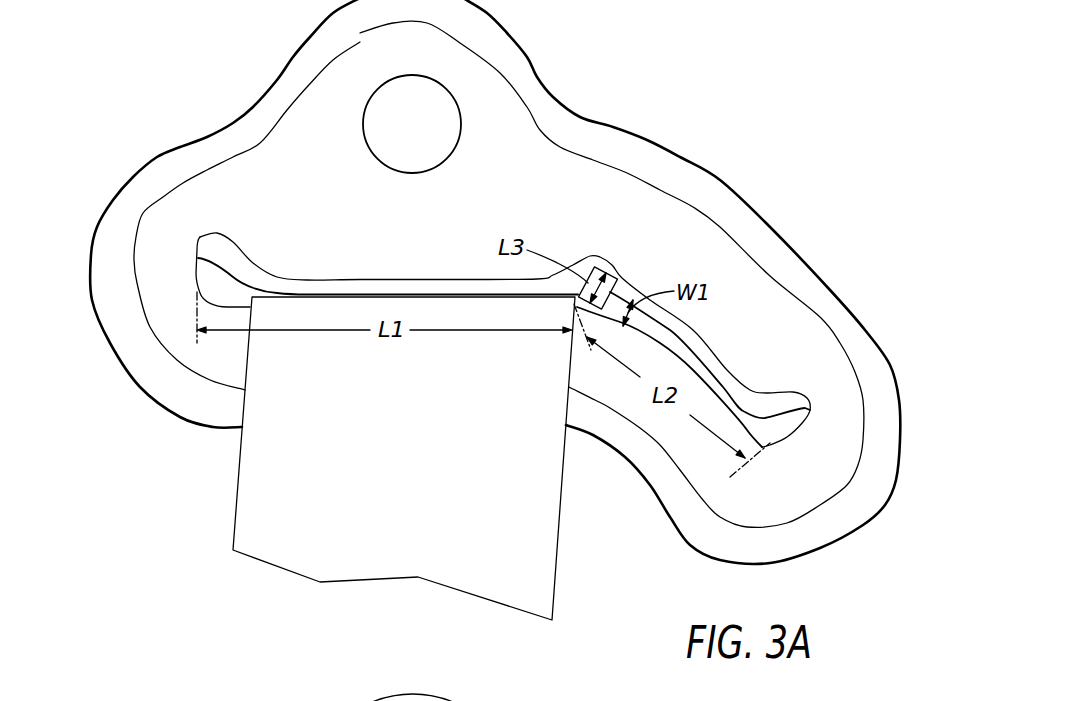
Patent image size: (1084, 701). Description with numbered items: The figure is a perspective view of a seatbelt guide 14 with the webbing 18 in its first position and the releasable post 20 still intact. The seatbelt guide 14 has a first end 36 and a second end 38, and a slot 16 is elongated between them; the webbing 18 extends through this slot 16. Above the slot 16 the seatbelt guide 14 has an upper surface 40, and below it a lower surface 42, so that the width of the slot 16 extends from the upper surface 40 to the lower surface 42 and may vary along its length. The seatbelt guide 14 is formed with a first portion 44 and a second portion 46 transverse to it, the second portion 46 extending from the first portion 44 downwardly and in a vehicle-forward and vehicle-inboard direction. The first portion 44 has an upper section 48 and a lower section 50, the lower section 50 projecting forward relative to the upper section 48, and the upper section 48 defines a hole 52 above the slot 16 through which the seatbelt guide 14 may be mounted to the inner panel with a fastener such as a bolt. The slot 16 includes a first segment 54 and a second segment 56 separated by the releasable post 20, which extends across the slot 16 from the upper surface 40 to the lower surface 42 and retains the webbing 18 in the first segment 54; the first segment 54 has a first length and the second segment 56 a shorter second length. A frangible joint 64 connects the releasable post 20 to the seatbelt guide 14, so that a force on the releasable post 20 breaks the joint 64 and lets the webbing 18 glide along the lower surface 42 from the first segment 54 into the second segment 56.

The seatbelt guide 14 is at (743, 93).
The slot 16 is at (225, 287).
The webbing 18 is at (268, 512).
The releasable post 20 is at (610, 280).
The first end 36 is at (170, 320).
The second end 38 is at (817, 473).
The upper surface 40 is at (317, 280).
The lower surface 42 is at (237, 307).
The first portion 44 is at (303, 153).
The second portion 46 is at (797, 360).
The upper section 48 is at (290, 117).
The lower section 50 is at (160, 267).
The hole 52 is at (430, 118).
The first segment 54 is at (438, 297).
The second segment 56 is at (680, 353).
The joint 64 is at (600, 268).